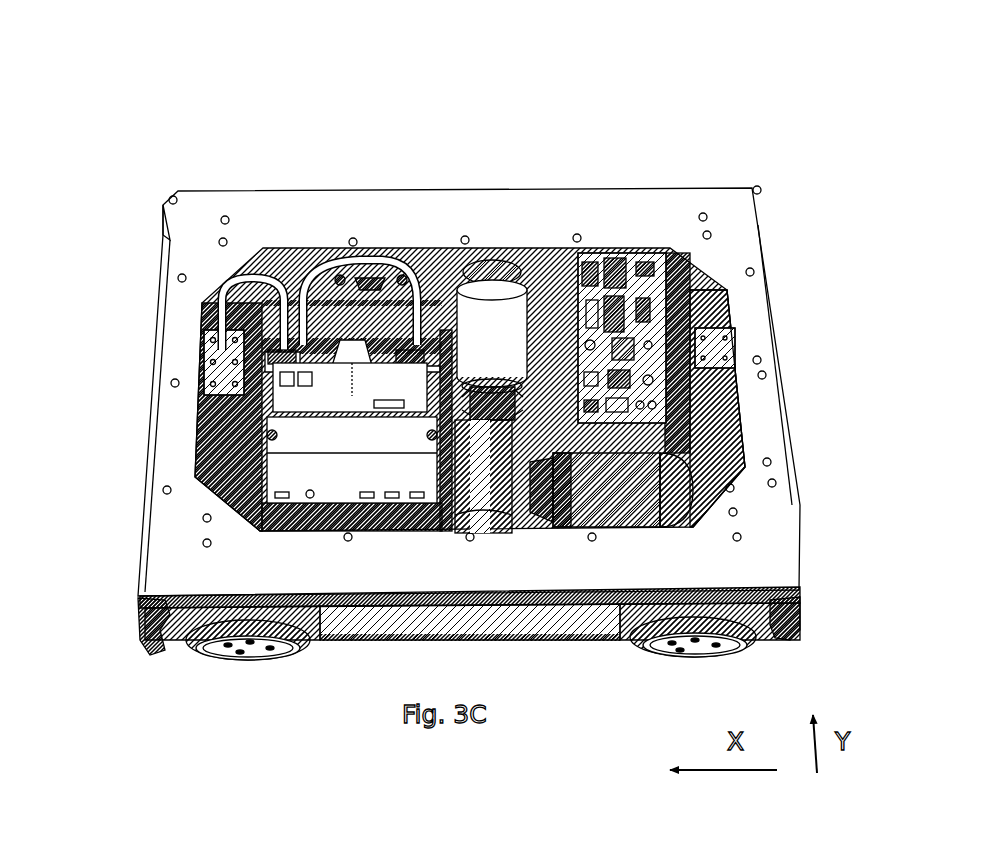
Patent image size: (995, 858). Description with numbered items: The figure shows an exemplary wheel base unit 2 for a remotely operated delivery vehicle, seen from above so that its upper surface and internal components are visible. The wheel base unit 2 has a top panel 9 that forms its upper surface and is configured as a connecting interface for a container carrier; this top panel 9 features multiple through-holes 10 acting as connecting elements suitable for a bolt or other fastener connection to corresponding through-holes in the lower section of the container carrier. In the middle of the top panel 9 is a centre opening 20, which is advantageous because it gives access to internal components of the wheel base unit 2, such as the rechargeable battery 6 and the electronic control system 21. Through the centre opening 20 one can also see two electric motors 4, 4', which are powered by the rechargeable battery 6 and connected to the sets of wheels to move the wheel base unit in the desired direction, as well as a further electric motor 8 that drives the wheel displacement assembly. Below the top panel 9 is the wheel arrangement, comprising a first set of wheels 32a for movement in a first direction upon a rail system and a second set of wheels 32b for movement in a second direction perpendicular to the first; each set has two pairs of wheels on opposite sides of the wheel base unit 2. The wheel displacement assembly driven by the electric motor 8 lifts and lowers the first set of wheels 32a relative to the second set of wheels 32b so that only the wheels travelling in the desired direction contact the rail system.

The wheel base unit 2 is at (175, 97).
The electric motor 4 is at (470, 254).
The electric motor 4' is at (703, 449).
The rechargeable battery 6 is at (307, 478).
The electric motor 8 is at (477, 497).
The top panel 9 is at (524, 218).
The through-holes 10 is at (226, 220).
The centre opening 20 is at (347, 391).
The electronic control system 21 is at (620, 347).
The first set of wheels 32a is at (227, 653).
The second set of wheels 32b is at (148, 632).